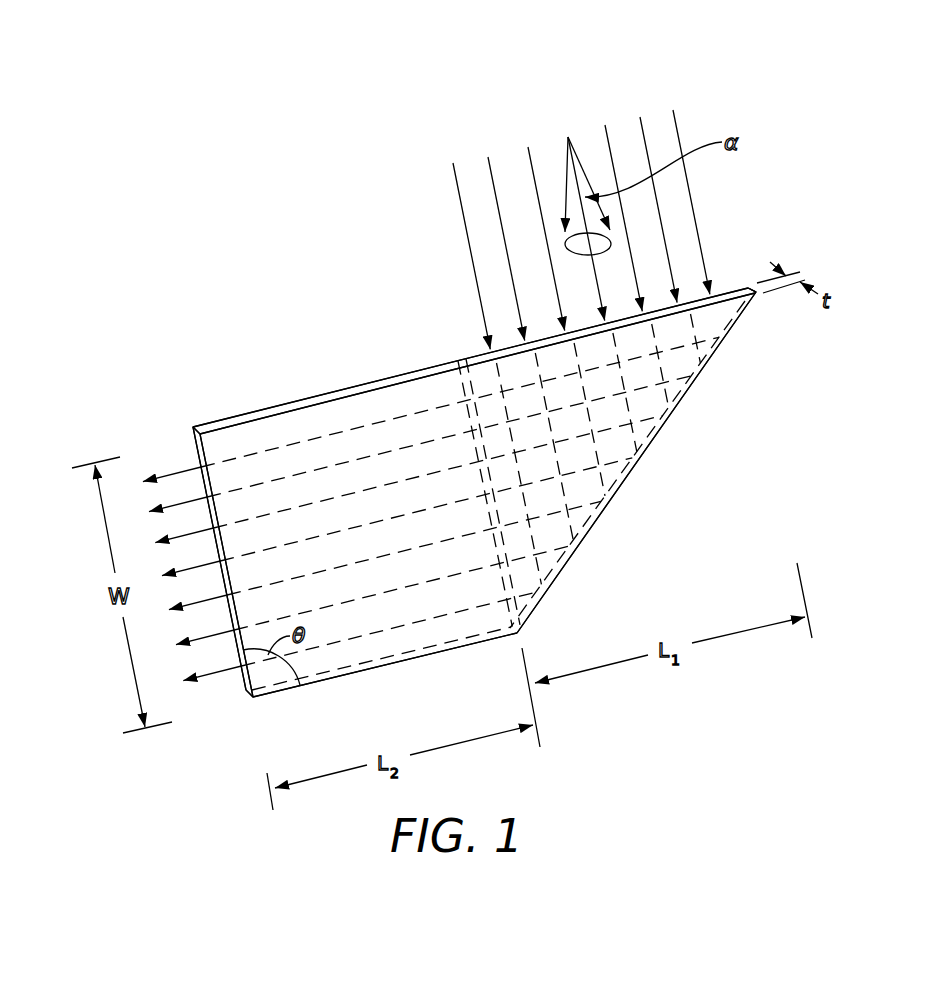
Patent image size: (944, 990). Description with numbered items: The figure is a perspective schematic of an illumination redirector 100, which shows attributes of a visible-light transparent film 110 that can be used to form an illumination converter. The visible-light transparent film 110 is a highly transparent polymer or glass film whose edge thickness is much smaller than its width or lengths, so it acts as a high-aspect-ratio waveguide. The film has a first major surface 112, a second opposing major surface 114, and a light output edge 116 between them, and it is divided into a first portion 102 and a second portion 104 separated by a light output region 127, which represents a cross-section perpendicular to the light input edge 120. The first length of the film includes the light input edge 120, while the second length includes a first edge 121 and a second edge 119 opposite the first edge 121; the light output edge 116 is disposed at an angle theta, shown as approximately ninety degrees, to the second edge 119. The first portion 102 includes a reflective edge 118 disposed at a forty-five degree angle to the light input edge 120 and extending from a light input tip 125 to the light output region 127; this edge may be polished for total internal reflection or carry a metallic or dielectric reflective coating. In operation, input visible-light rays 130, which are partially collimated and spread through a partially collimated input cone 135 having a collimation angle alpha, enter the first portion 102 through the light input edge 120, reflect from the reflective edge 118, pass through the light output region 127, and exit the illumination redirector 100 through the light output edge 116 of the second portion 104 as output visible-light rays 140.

The illumination redirector 100 is at (213, 208).
The first portion 102 is at (646, 486).
The second portion 104 is at (411, 673).
The visible-light transparent film 110 is at (253, 698).
The first major surface 112 is at (383, 397).
The second opposing major surface 114 is at (297, 399).
The light output edge 116 is at (192, 446).
The reflective edge 118 is at (678, 396).
The second edge 119 is at (328, 678).
The light input edge 120 is at (731, 290).
The first edge 121 is at (225, 420).
The light input tip 125 is at (762, 298).
The light output region 127 is at (507, 580).
The input visible-light rays 130 is at (462, 214).
The partially collimated input cone 135 is at (613, 251).
The output visible-light rays 140 is at (220, 674).